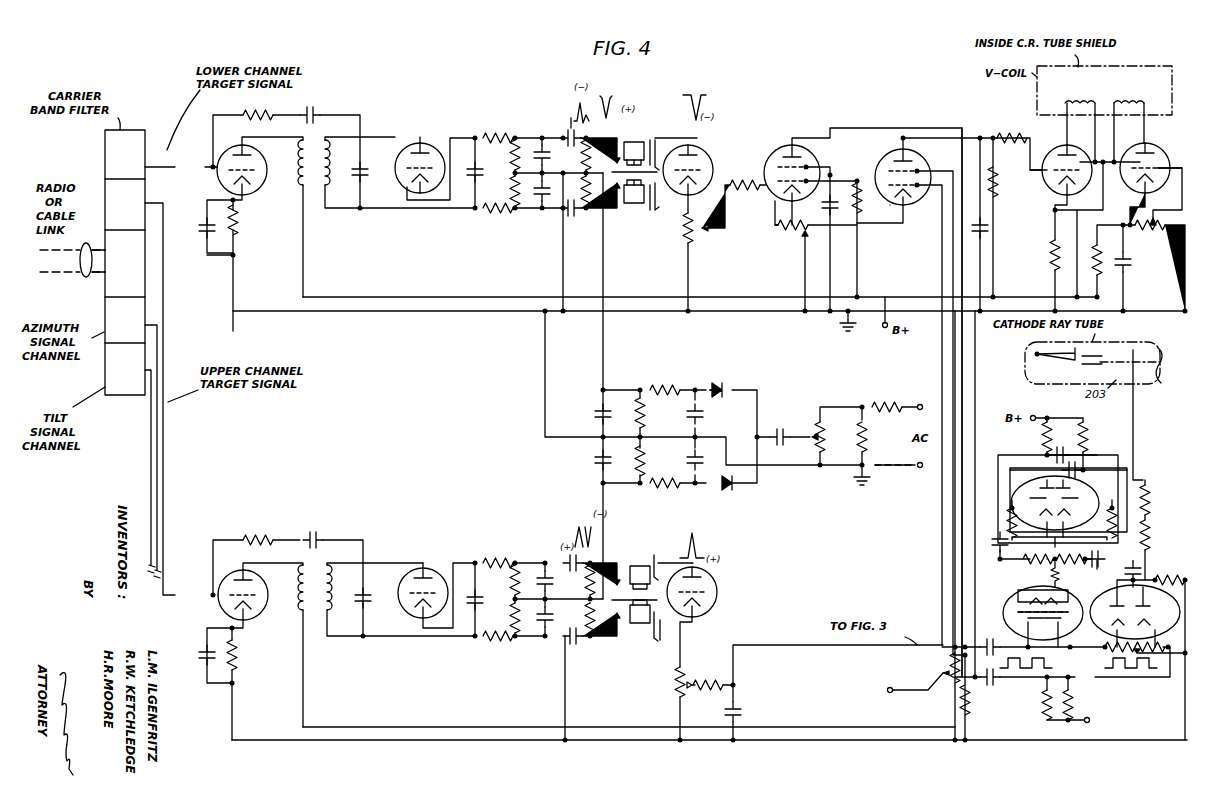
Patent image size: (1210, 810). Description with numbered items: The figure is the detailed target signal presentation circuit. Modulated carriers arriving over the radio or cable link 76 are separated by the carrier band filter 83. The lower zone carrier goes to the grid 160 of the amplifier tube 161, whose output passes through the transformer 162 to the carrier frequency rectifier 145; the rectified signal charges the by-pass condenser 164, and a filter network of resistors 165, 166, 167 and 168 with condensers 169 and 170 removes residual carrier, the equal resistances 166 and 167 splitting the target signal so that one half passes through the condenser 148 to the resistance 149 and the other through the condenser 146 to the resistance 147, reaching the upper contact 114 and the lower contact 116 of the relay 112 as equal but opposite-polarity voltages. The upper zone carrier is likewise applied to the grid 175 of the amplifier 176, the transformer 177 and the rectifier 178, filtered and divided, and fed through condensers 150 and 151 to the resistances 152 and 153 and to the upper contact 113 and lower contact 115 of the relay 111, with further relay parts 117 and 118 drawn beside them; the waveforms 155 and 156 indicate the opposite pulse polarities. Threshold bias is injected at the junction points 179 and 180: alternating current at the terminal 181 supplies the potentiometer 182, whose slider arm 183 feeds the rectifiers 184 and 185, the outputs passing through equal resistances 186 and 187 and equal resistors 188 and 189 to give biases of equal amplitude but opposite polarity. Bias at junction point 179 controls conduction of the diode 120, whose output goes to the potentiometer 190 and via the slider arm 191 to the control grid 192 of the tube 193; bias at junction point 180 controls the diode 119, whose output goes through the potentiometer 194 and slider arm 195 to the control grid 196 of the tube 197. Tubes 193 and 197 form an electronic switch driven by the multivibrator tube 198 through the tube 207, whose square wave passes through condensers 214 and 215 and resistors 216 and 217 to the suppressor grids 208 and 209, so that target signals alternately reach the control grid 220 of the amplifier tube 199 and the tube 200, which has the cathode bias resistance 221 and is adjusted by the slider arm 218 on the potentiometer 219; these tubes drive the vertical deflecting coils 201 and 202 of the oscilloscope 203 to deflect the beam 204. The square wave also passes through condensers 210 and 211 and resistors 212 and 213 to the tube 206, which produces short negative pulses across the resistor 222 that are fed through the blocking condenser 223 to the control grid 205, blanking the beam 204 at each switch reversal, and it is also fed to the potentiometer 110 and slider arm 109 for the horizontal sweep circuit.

The radio or cable link connector 76 is at (64, 275).
The carrier band filter 83 is at (140, 396).
The potentiometer slider arm 109 is at (902, 680).
The potentiometer 110 is at (894, 694).
The relay 111 is at (638, 564).
The relay 112 is at (638, 140).
The upper contact 113 is at (616, 560).
The upper contact 114 is at (594, 173).
The lower contact 115 is at (616, 638).
The lower contact 116 is at (617, 208).
The relay coil 117 is at (624, 611).
The relay contact 118 is at (655, 212).
The diode 119 is at (718, 584).
The diode 120 is at (704, 159).
The carrier frequency rectifier 145 is at (431, 142).
The condenser 146 is at (582, 138).
The resistance 147 is at (570, 118).
The condenser 148 is at (570, 218).
The resistance 149 is at (600, 220).
The coupling capacitor 150 is at (560, 648).
The coupling capacitor 151 is at (560, 557).
The resistance 152 is at (592, 574).
The resistance 153 is at (604, 643).
The pulse waveform 155 is at (692, 542).
The pulse waveform 156 is at (714, 103).
The grid 160 is at (259, 190).
The amplifier tube 161 is at (258, 121).
The transformer 162 is at (318, 120).
The by-pass condenser 164 is at (484, 178).
The resistor 165 is at (491, 216).
The resistor 166 is at (510, 202).
The resistor 167 is at (500, 127).
The resistor 168 is at (494, 141).
The condenser 169 is at (538, 205).
The condenser 170 is at (536, 138).
The grid 175 is at (253, 620).
The amplifier 176 is at (240, 642).
The transformer 177 is at (320, 615).
The rectifier 178 is at (430, 574).
The junction point 179 is at (552, 235).
The junction point 180 is at (586, 601).
The terminal 181 is at (920, 405).
The potentiometer 182 is at (815, 452).
The slider arm 183 is at (791, 432).
The rectifier 184 is at (725, 385).
The rectifier 185 is at (730, 490).
The resistance 186 is at (671, 492).
The resistance 187 is at (665, 381).
The resistor 188 is at (642, 475).
The resistor 189 is at (642, 429).
The potentiometer 190 is at (701, 234).
The slider arm 191 is at (724, 228).
The control grid 192 is at (792, 161).
The tube 193 is at (745, 197).
The potentiometer 194 is at (672, 684).
The potentiometer slider arm 195 is at (707, 680).
The control grid 196 is at (917, 214).
The tube 197 is at (895, 204).
The multivibrator tube 198 is at (1014, 500).
The amplifier tube 199 is at (1088, 189).
The amplifier tube 200 is at (1162, 151).
The vertical deflecting coil 201 is at (1062, 101).
The vertical deflecting coil 202 is at (1143, 105).
The oscilloscope system 203 is at (1168, 73).
The oscilloscope beam 204 is at (1153, 354).
The control grid 205 is at (1160, 378).
The tube 206 is at (1154, 542).
The tube 207 is at (1080, 596).
The suppressor grid 208 is at (840, 179).
The suppressor grid 209 is at (945, 156).
The condenser 210 is at (1102, 710).
The condenser 211 is at (1071, 700).
The resistor 212 is at (1155, 650).
The resistor 213 is at (1133, 654).
The condenser 214 is at (1000, 630).
The condenser 215 is at (990, 684).
The resistor 216 is at (976, 702).
The resistor 217 is at (943, 673).
The slider arm 218 is at (1175, 160).
The potentiometer 219 is at (1164, 233).
The control grid 220 is at (1037, 166).
The cathode bias resistance 221 is at (1045, 258).
The resistor 222 is at (1169, 571).
The blocking condenser 223 is at (1146, 572).